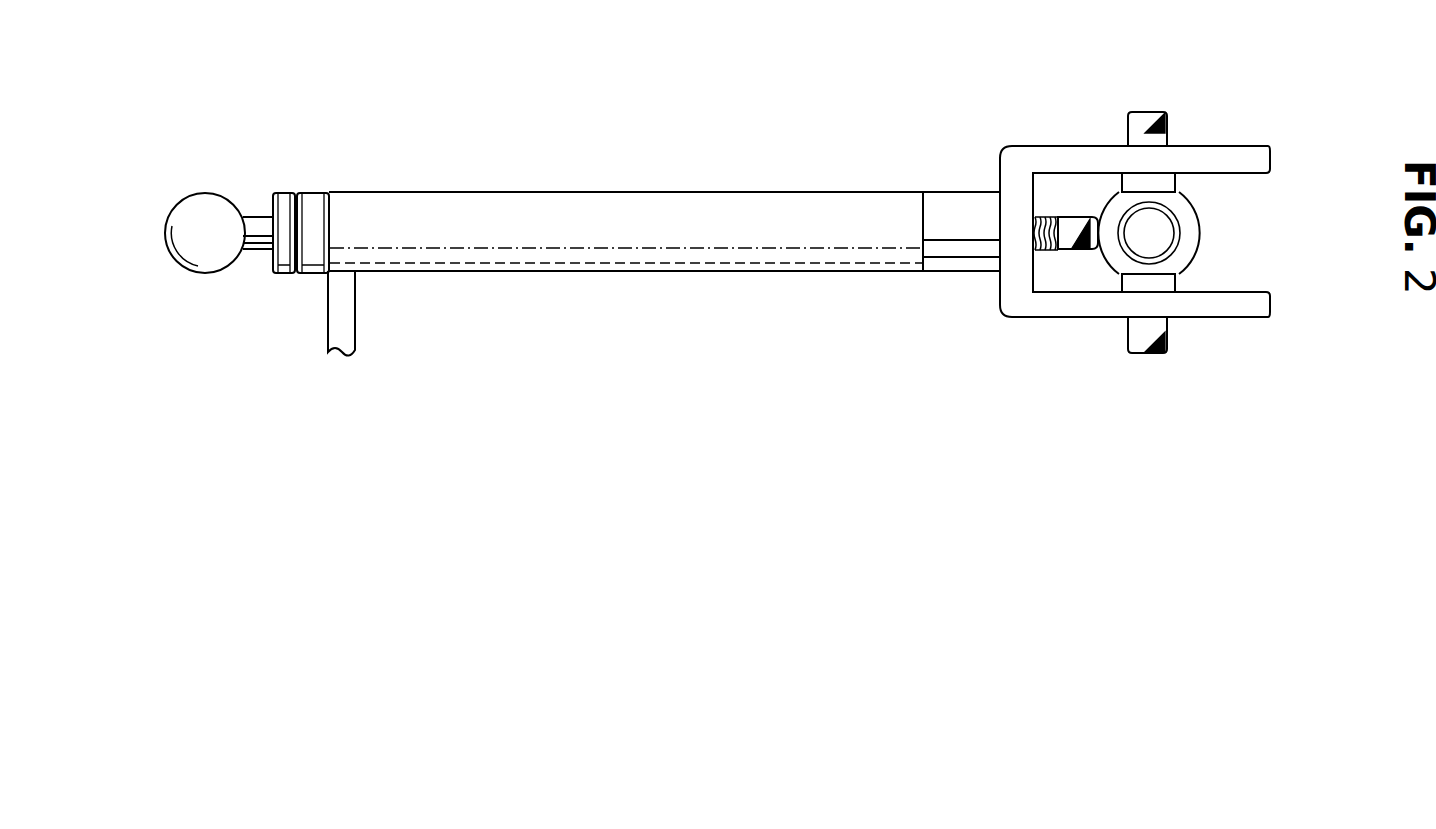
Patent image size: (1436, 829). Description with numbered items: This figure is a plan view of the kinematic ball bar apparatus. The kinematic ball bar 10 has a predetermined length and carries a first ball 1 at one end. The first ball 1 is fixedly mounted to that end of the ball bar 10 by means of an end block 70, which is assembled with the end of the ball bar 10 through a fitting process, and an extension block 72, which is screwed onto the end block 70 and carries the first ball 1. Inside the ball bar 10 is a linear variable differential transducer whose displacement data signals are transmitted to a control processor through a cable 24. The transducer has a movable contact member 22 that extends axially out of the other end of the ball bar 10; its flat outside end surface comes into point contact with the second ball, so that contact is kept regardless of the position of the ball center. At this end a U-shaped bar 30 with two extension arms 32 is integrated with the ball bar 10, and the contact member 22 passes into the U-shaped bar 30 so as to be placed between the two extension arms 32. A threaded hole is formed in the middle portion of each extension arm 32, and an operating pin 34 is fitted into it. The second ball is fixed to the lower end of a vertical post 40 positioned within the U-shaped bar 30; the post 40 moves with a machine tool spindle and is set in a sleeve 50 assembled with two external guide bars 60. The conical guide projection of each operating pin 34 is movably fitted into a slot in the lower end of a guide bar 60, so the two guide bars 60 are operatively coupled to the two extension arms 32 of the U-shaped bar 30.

The first ball 1 is at (143, 292).
The kinematic ball bar 10 is at (673, 332).
The movable contact member 22 is at (1072, 247).
The cable 24 is at (337, 335).
The U-shaped bar 30 is at (1005, 143).
The extension arm 32 is at (1213, 373).
The operating pin 34 is at (1148, 112).
The vertical post 40 is at (1307, 220).
The sleeve 50 is at (1118, 258).
The guide bar 60 is at (1227, 75).
The end block 70 is at (311, 203).
The extension block 72 is at (283, 190).